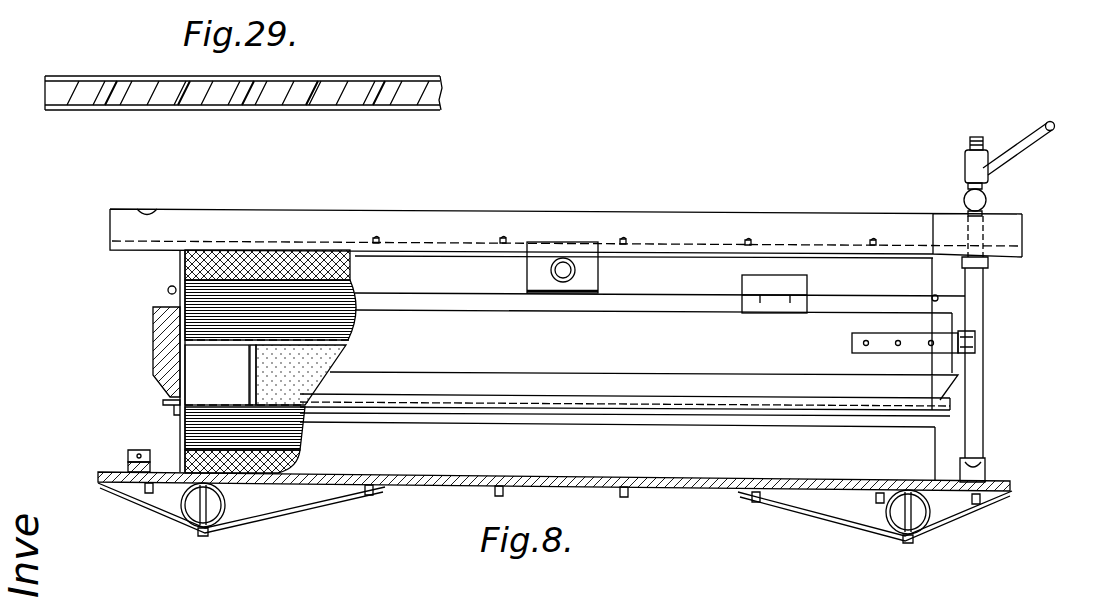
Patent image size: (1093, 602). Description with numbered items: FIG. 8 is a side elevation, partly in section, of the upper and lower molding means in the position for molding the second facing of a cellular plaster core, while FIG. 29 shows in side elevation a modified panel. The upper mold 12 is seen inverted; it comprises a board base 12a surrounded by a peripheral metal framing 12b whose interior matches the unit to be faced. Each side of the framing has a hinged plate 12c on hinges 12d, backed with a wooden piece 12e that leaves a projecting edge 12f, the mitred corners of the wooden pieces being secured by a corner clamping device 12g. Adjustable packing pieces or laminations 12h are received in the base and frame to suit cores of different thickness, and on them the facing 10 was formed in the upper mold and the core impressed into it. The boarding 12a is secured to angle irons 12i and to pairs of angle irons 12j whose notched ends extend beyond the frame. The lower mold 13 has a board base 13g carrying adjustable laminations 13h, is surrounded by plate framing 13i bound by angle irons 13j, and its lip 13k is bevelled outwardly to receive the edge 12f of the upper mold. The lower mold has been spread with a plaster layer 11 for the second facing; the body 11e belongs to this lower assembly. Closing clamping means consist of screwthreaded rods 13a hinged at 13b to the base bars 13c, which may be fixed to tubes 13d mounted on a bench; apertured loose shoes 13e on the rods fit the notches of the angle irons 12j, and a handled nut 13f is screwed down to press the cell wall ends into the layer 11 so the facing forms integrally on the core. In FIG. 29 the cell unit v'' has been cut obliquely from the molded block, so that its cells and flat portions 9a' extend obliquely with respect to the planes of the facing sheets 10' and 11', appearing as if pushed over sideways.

In FIG. 29, the flat portions 9a' is at (248, 109).
In FIG. 29, the facing sheet 10' is at (243, 82).
In FIG. 29, the facing sheet 11' is at (263, 116).
In FIG. 29, the cell unit v'' is at (81, 58).
In FIG. 8, the facing 10 is at (368, 332).
In FIG. 8, the plaster layer 11 is at (354, 367).
In FIG. 8, the frame body 11e is at (644, 334).
In FIG. 8, the mold 12 is at (478, 199).
In FIG. 8, the base 12a is at (212, 262).
In FIG. 8, the peripheral metal framing 12b is at (640, 276).
In FIG. 8, the hinged plate 12c is at (183, 358).
In FIG. 8, the hinges 12d is at (773, 287).
In FIG. 8, the wooden piece 12e is at (160, 340).
In FIG. 8, the projecting edge 12f is at (184, 408).
In FIG. 8, the corner clamping device 12g is at (852, 345).
In FIG. 8, the adjustable packing pieces 12h is at (253, 307).
In FIG. 8, the angle irons 12i is at (877, 232).
In FIG. 8, the angle irons 12j is at (190, 228).
In FIG. 8, the mold 13 is at (625, 437).
In FIG. 8, the rods 13a is at (976, 346).
In FIG. 8, the hinge 13b is at (983, 462).
In FIG. 8, the base bars 13c is at (113, 472).
In FIG. 8, the tubes 13d is at (262, 522).
In FIG. 8, the shoes 13e is at (982, 203).
In FIG. 8, the handled nut 13f is at (970, 162).
In FIG. 8, the board base 13g is at (198, 506).
In FIG. 8, the adjustable laminations 13h is at (280, 440).
In FIG. 8, the plate framing 13i is at (470, 458).
In FIG. 8, the angle irons 13j is at (830, 420).
In FIG. 8, the lip 13k is at (790, 405).